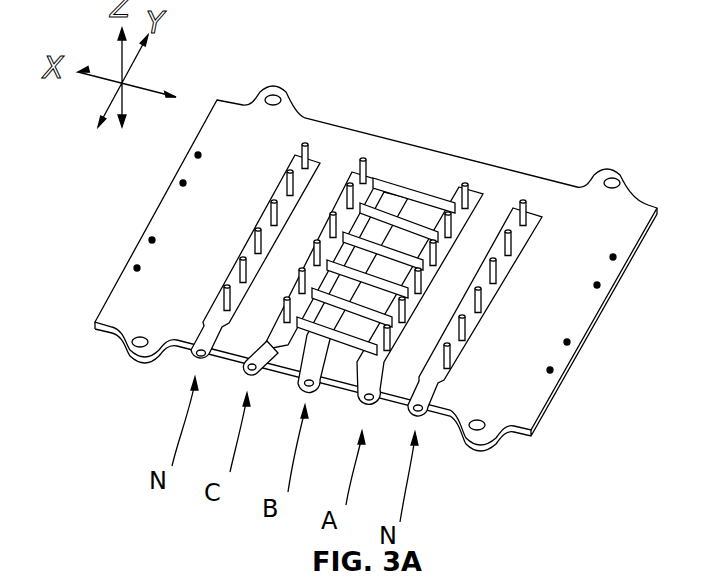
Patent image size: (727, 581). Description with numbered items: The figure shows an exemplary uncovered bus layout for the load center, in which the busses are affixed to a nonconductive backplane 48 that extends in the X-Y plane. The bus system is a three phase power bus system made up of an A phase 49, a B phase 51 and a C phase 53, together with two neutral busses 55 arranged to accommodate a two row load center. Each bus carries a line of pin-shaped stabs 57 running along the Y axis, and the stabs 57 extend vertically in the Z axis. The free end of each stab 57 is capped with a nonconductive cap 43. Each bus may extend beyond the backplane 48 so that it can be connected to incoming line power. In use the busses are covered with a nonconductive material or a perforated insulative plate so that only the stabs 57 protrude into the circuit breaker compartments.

The nonconductive backplane 48 is at (257, 178).
The nonconductive cap 43 is at (256, 226).
The pin-shaped stabs 57 is at (310, 148).
The neutral busses 55 is at (190, 361).
The C phase 53 is at (243, 372).
The B phase 51 is at (300, 383).
The A phase 49 is at (362, 410).